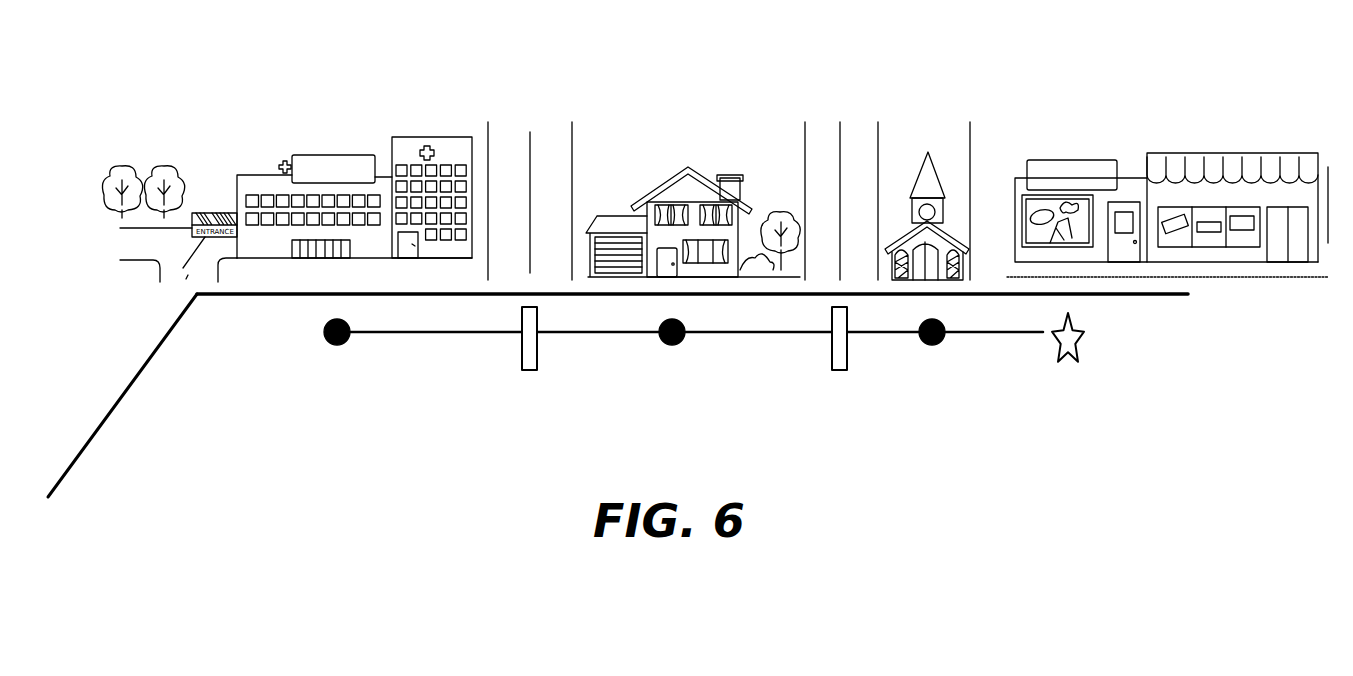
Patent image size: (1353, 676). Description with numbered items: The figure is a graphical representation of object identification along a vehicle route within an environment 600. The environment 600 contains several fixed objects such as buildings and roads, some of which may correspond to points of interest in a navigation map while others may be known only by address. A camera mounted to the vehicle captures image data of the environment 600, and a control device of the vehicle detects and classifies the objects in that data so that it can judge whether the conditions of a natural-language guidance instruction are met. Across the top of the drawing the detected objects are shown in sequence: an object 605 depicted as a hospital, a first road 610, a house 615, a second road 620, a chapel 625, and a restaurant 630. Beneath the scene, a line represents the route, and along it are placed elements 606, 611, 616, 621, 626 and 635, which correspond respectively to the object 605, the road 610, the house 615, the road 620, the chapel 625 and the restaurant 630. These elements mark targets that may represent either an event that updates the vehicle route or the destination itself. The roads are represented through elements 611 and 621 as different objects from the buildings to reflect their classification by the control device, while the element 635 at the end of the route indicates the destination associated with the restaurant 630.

The environment 600 is at (236, 110).
The object 605 is at (337, 143).
The element 606 is at (341, 349).
The road 610 is at (548, 118).
The element 611 is at (526, 362).
The house 615 is at (697, 157).
The element 616 is at (674, 356).
The road 620 is at (845, 120).
The element 621 is at (836, 356).
The chapel 625 is at (945, 133).
The element 626 is at (936, 356).
The restaurant 630 is at (1068, 158).
The element 635 is at (1073, 360).